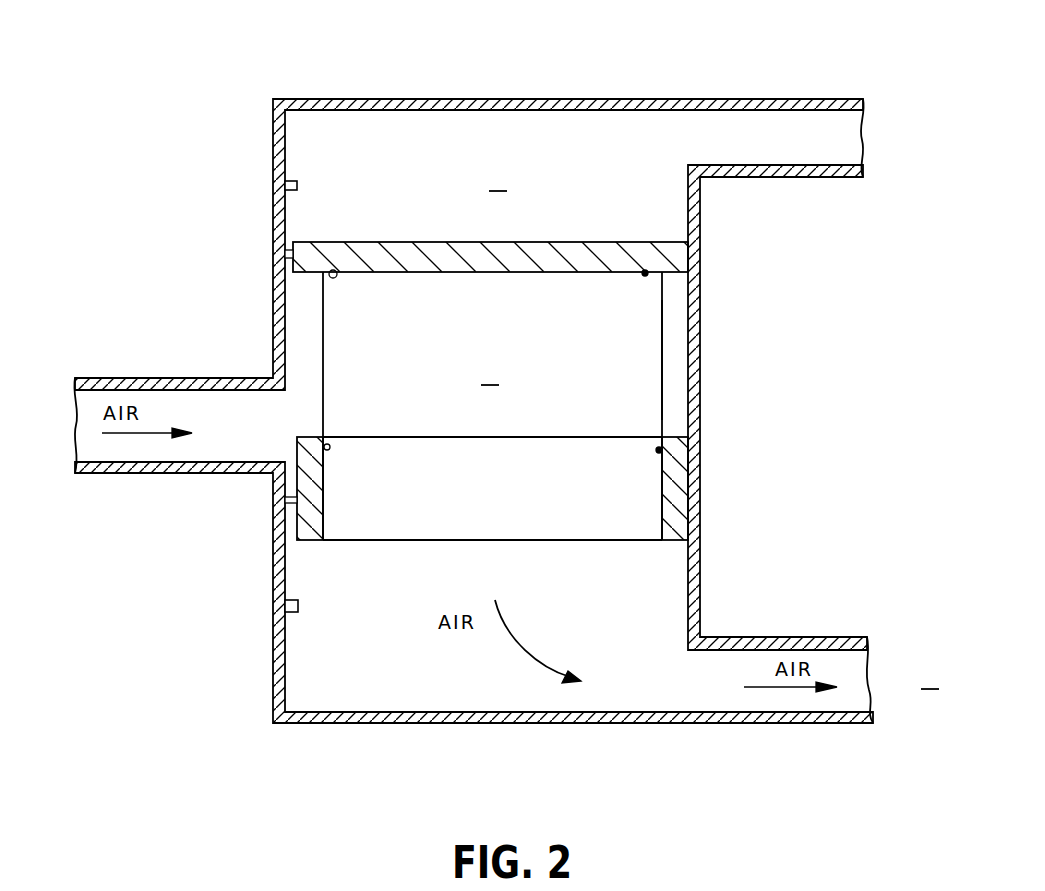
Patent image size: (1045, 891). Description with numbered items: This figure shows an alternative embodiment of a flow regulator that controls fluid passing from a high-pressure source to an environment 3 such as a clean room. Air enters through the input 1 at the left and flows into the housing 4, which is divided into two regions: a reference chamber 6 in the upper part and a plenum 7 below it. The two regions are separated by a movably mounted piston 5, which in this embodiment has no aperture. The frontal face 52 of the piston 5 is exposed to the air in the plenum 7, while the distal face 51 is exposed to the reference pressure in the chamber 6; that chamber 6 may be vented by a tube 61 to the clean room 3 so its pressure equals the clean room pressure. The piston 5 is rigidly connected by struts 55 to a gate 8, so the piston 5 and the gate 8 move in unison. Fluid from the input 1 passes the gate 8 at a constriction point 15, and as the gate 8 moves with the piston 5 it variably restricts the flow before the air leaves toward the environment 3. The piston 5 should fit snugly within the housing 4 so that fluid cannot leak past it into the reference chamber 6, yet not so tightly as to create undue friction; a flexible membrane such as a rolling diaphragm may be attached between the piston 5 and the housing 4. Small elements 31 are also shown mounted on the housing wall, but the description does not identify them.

The input 1 is at (157, 500).
The environment 3 is at (930, 675).
The housing 4 is at (700, 576).
The piston 5 is at (663, 269).
The chamber 6 is at (498, 177).
The plenum 7 is at (492, 406).
The gate 8 is at (681, 478).
The constriction point 15 is at (275, 378).
The sensor 31 is at (285, 185).
The distal face 51 is at (657, 243).
The frontal face 52 is at (678, 276).
The struts 55 is at (663, 357).
The tube 61 is at (777, 99).